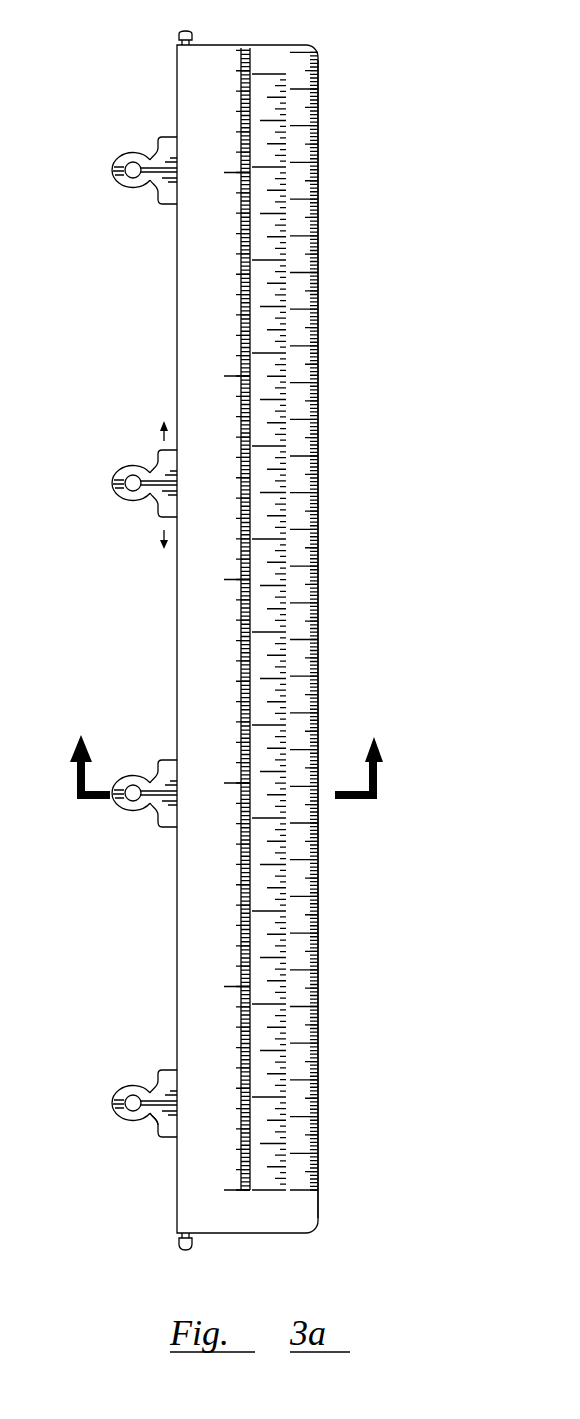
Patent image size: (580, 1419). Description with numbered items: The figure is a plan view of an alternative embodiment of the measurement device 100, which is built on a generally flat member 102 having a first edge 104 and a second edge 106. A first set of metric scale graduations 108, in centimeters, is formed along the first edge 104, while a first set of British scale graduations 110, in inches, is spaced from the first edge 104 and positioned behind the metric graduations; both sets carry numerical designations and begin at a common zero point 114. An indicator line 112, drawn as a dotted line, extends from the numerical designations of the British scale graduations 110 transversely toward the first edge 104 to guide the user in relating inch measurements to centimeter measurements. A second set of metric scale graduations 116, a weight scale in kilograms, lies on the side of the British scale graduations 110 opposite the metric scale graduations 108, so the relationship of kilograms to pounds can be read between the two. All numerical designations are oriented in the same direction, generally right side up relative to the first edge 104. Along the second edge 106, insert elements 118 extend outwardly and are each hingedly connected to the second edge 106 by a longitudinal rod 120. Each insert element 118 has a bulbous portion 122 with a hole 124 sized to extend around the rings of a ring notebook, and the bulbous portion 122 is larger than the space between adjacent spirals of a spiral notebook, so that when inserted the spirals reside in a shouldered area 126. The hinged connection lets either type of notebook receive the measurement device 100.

The measurement device 100 is at (428, 258).
The flat member 102 is at (268, 1233).
The first edge 104 is at (318, 936).
The second edge 106 is at (177, 955).
The first set of metric scale graduations 108 is at (312, 1026).
The first set of British scale graduations 110 is at (280, 600).
The indicator line 112 is at (300, 550).
The common zero point 114 is at (313, 1198).
The second set of metric scale graduations 116 is at (238, 1168).
The insert elements 118 is at (160, 137).
The longitudinal rod 120 is at (180, 1243).
The bulbous portion 122 is at (122, 184).
The hole 124 is at (121, 165).
The shouldered area 126 is at (148, 1118).